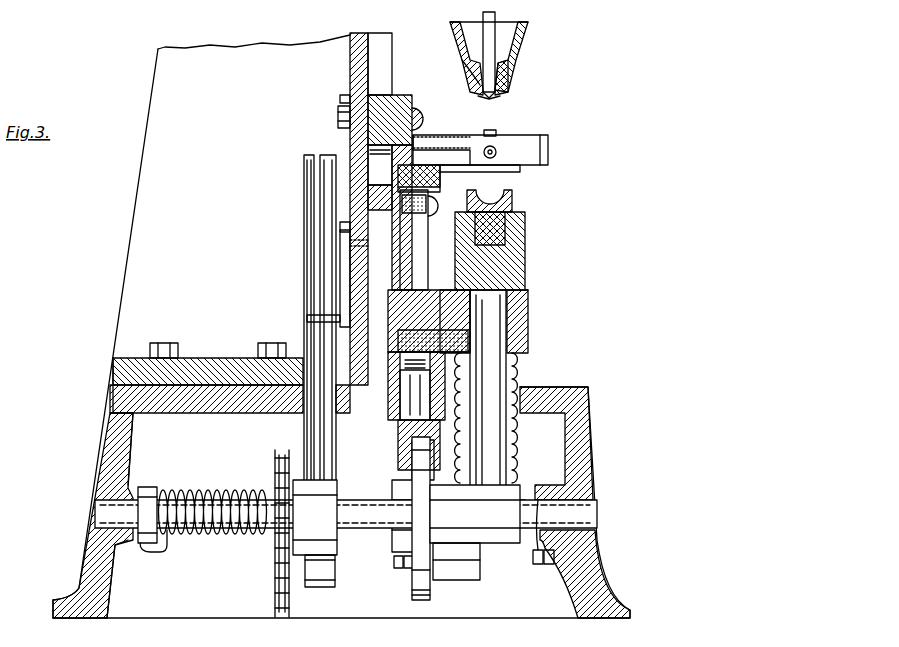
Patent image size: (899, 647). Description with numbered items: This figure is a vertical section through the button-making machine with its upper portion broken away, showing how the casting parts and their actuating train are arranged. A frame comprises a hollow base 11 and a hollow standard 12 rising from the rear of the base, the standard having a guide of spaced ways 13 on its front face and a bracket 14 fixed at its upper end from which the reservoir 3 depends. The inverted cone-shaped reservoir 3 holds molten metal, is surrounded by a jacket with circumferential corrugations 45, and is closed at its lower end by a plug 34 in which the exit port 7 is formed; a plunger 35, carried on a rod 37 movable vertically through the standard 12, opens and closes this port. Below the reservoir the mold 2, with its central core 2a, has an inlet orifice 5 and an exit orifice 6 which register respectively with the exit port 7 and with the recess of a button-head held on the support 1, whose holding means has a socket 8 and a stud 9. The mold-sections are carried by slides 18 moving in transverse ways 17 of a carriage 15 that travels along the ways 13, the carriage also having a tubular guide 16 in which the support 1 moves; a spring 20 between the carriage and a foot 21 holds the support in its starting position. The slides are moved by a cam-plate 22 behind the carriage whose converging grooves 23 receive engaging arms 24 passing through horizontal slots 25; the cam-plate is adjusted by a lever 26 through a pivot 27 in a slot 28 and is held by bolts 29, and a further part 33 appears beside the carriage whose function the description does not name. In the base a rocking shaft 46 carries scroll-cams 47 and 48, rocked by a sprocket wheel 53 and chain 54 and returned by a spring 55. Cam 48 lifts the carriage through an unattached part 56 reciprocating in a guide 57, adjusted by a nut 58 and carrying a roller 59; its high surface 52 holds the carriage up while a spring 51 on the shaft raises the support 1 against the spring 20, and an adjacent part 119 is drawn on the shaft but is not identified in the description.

The support 1 is at (492, 325).
The mold 2 is at (541, 152).
The central projection, or core 2a is at (495, 142).
The reservoir 3 is at (515, 50).
The inlet orifice 5 is at (490, 145).
The exit orifice 6 is at (495, 168).
The exit port 7 is at (492, 99).
The socket 8 is at (495, 195).
The stud 9 is at (508, 240).
The hollow base 11 is at (190, 405).
The hollow upright, or standard 12 is at (148, 250).
The ways 13 is at (385, 38).
The bracket 14 is at (418, 170).
The carriage 15 is at (395, 115).
The vertical tubular guide 16 is at (529, 275).
The transverse horizontal ways 17 is at (412, 250).
The slides 18 is at (442, 182).
The spring 20 is at (512, 440).
The foot 21 is at (508, 488).
The cam-plate 22 is at (343, 118).
The grooves 23 is at (375, 165).
The engaging arms 24 is at (316, 203).
The horizontal slots 25 is at (422, 215).
The lever 26 is at (328, 275).
The pivot 27 is at (340, 240).
The slot 28 is at (345, 225).
The bolts 29 is at (348, 104).
The roller 33 is at (420, 132).
The plug 34 is at (512, 85).
The plunger 35 is at (496, 20).
The rod 37 is at (322, 297).
The circumferential corrugations 45 is at (462, 65).
The rocking element or shaft 46 is at (100, 512).
The cam 47 is at (327, 573).
The cam 48 is at (413, 586).
The spring 51 is at (540, 555).
The high surface 52 is at (420, 600).
The sprocket wheel 53 is at (276, 462).
The chain 54 is at (276, 610).
The spring 55 is at (232, 535).
The unattached part 56 is at (402, 426).
The guide 57 is at (400, 372).
The movable shoulder or nut 58 is at (398, 345).
The roller 59 is at (408, 482).
The cam 119 is at (446, 570).